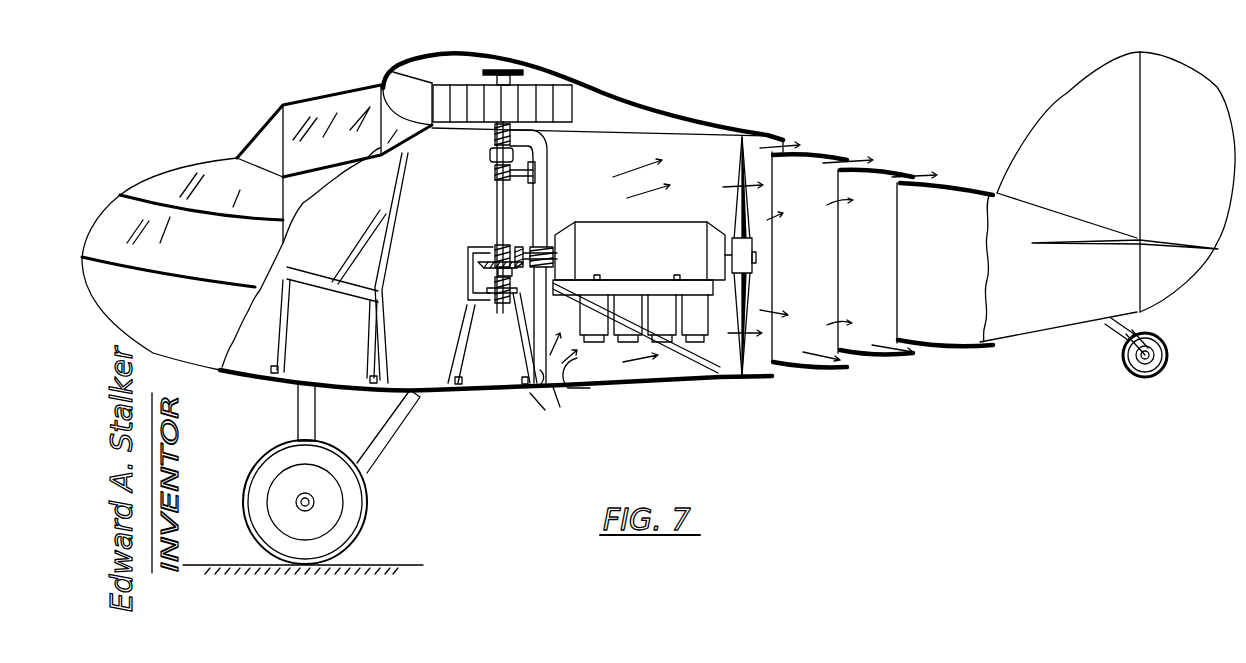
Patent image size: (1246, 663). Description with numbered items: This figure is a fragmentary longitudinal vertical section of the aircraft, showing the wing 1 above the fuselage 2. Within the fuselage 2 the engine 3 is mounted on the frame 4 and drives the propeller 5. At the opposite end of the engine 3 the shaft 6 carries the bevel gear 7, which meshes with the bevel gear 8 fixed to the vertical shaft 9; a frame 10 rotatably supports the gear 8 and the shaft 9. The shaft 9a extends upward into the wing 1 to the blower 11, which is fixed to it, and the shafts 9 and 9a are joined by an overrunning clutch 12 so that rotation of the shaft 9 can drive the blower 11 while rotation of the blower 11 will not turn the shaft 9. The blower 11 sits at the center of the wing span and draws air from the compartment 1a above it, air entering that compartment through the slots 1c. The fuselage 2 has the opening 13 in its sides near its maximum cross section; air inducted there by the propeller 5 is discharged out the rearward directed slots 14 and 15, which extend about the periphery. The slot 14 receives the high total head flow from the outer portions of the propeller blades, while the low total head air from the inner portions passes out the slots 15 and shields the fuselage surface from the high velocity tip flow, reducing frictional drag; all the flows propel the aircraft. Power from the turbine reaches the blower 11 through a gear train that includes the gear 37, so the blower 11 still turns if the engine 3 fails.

The wing 1 is at (397, 75).
The compartment 1a is at (450, 70).
The slots 1c is at (530, 67).
The fuselage 2 is at (935, 180).
The engine 3 is at (642, 282).
The frame 4 is at (572, 285).
The propeller 5 is at (742, 285).
The shaft 6 is at (551, 247).
The bevel gear 7 is at (520, 247).
The bevel gear 8 is at (490, 260).
The vertical shaft 9 is at (500, 197).
The shaft 9a is at (495, 137).
The frame 10 is at (545, 148).
The blower 11 is at (557, 102).
The overrunning clutch 12 is at (492, 155).
The opening 13 is at (563, 385).
The slot 14 is at (750, 365).
The slots 15 is at (848, 362).
The gear 37 is at (483, 73).